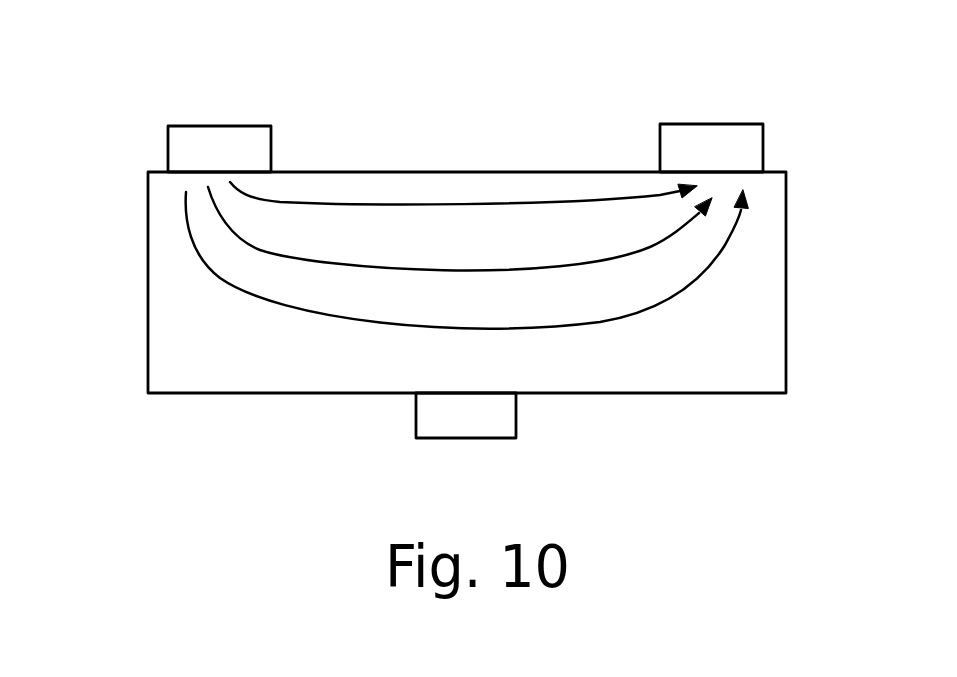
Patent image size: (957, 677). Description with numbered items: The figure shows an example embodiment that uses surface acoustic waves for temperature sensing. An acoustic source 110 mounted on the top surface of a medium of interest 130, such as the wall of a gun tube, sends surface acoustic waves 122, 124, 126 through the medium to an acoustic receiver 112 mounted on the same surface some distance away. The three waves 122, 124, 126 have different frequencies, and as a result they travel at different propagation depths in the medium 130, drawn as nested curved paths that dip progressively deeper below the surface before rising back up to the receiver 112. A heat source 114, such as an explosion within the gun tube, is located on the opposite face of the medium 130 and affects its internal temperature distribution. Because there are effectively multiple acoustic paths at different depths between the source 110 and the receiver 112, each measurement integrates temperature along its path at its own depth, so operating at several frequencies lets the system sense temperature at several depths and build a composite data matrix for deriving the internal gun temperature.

The acoustic source 110 is at (210, 126).
The acoustic receiver 112 is at (728, 124).
The heat source 114 is at (507, 438).
The surface acoustic wave 122 is at (472, 205).
The surface acoustic wave 124 is at (258, 248).
The surface acoustic wave 126 is at (703, 278).
The medium of interest 130 is at (197, 372).